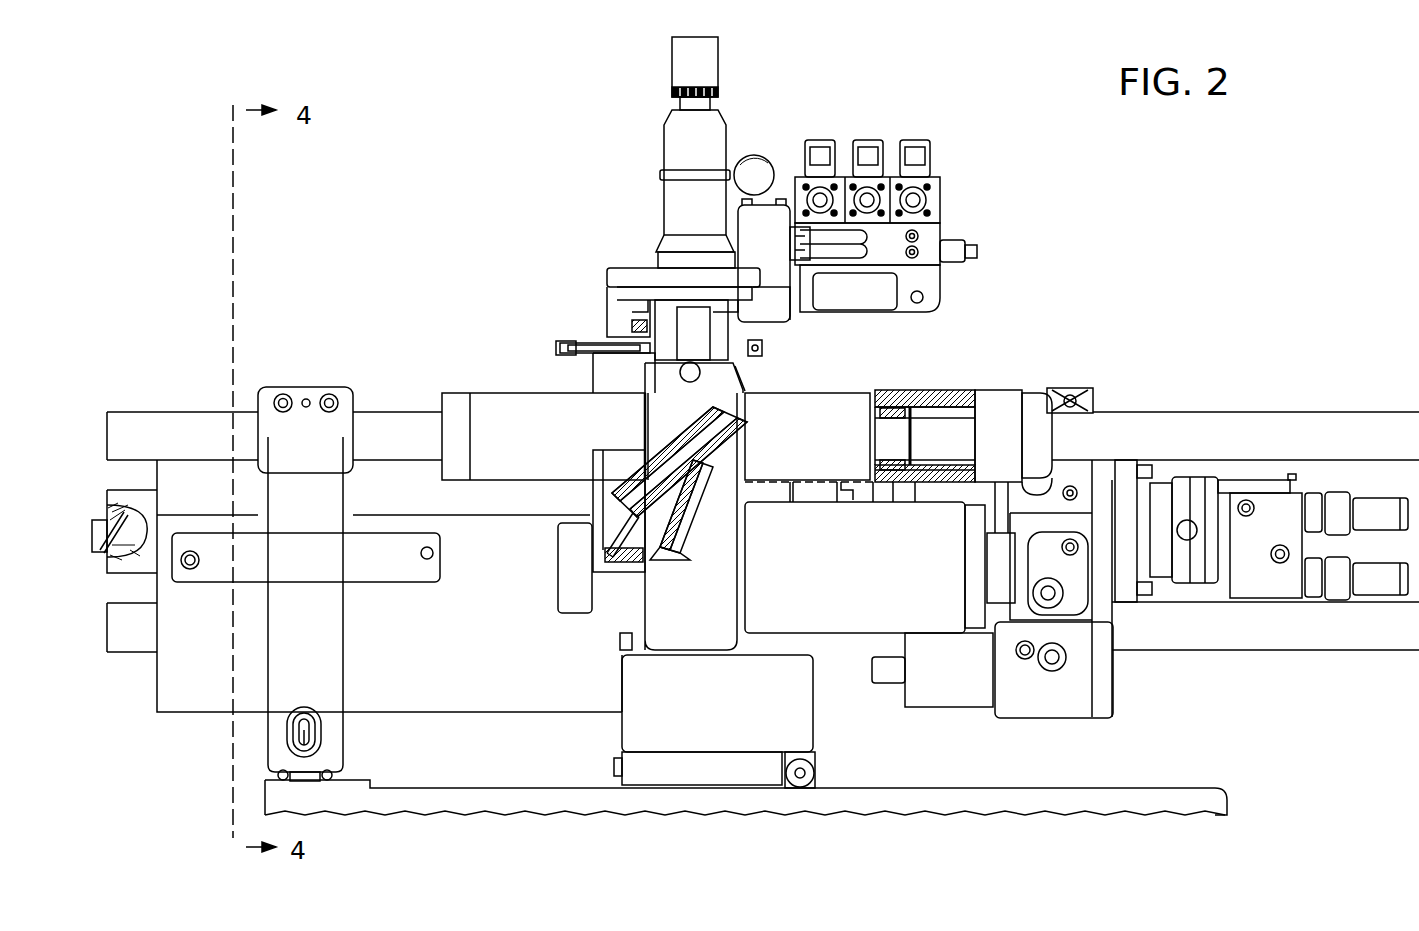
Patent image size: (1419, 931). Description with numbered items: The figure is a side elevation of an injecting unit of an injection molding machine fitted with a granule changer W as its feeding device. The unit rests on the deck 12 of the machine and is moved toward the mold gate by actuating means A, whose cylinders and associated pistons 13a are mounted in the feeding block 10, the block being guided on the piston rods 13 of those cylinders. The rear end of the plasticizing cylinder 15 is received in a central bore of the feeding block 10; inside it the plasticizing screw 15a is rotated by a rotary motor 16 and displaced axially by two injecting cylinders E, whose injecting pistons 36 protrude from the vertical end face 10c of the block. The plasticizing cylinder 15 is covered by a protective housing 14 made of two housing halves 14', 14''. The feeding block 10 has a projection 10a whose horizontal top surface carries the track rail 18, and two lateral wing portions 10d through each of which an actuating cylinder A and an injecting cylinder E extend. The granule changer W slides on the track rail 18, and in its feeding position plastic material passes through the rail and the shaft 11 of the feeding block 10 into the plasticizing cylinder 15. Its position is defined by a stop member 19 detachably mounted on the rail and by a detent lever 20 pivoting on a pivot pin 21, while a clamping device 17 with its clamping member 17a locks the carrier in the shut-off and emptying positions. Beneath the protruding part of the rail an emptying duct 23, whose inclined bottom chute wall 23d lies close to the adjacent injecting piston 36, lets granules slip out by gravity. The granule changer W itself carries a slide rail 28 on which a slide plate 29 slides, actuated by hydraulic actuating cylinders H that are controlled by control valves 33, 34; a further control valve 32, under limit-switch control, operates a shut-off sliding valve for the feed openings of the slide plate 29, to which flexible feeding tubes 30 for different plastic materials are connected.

The feeding block 10 is at (648, 636).
The projection 10a is at (757, 378).
The vertical end face 10c is at (640, 460).
The lateral wing portion 10d is at (758, 466).
The shaft 11 is at (700, 470).
The deck 12 is at (1235, 800).
The piston rod 13 is at (190, 432).
The piston 13a is at (905, 392).
The protective housing 14 is at (389, 618).
The housing half 14' is at (431, 724).
The housing half 14'' is at (342, 565).
The plasticizing cylinder 15 is at (122, 500).
The plasticizing screw 15a is at (115, 548).
The rotary motor 16 is at (1300, 492).
The clamping device 17 is at (690, 408).
The clamping member 17a is at (628, 320).
The track rail 18 is at (685, 382).
The stop member 19 is at (764, 348).
The detent lever 20 is at (562, 350).
The pivot pin 21 is at (600, 345).
The emptying duct 23 is at (618, 378).
The bottom chute wall 23d is at (613, 563).
The slide rail 28 is at (625, 292).
The slide plate 29 is at (650, 278).
The flexible feeding tube 30 is at (682, 85).
The control valve 32 is at (822, 190).
The control valve 33 is at (868, 190).
The control valve 34 is at (914, 190).
The injecting piston 36 is at (560, 548).
The granule changer W is at (658, 188).
The hydraulic actuating cylinder H is at (765, 225).
The actuating means A is at (873, 392).
The injecting cylinder E is at (858, 638).